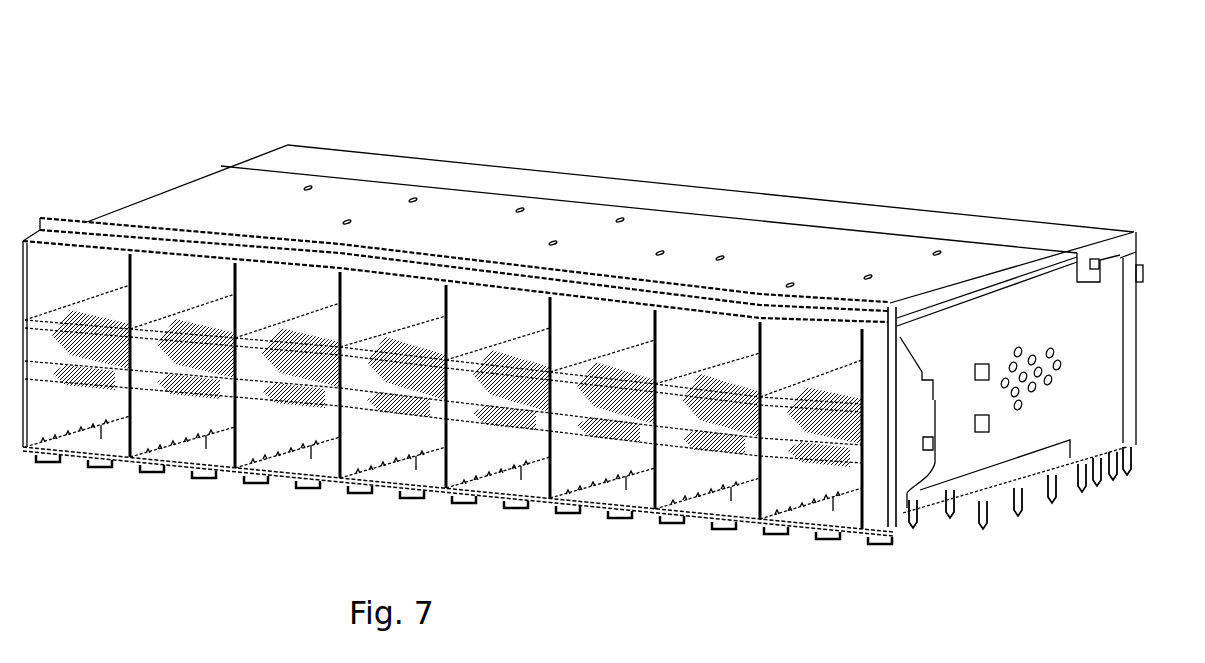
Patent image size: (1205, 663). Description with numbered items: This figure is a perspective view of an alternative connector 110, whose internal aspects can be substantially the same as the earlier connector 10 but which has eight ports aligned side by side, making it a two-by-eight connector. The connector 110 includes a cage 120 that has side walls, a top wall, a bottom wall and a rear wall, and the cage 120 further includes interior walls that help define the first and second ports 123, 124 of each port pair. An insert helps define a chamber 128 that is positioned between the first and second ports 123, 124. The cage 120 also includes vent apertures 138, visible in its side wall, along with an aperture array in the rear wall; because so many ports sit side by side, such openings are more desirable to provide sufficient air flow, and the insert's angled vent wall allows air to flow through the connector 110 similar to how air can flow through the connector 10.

The connector 110 is at (483, 120).
The cage 120 is at (623, 173).
The first port 123 is at (383, 313).
The second port 124 is at (365, 446).
The chamber 128 is at (355, 380).
The vent apertures 138 is at (1078, 360).
The connector 10 is at (673, 280).